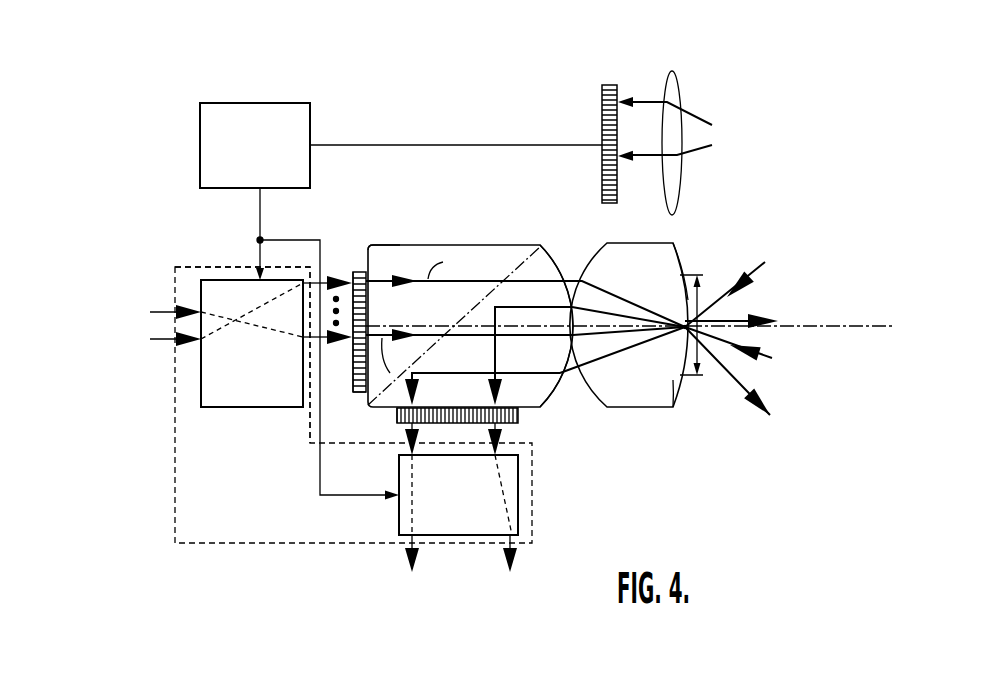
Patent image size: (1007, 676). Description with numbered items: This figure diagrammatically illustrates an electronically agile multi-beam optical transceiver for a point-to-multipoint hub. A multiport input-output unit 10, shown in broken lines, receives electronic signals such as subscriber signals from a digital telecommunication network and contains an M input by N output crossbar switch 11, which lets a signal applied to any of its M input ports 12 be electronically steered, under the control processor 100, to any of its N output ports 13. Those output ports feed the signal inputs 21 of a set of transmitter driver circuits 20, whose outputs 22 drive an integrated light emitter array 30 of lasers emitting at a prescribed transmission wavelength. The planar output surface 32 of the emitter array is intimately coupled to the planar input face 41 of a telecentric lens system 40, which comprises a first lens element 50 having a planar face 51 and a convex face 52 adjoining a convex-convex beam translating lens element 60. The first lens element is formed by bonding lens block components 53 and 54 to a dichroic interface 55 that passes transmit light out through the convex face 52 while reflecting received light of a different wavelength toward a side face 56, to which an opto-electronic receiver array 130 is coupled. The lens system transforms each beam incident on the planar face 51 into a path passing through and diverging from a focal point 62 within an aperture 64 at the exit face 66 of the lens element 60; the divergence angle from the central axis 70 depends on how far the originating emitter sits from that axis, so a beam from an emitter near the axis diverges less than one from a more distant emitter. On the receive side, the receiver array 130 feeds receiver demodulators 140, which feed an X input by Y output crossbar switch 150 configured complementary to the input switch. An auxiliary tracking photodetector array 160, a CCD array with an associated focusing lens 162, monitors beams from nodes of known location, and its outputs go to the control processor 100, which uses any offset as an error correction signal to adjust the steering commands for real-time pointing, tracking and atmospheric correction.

The multiport input-output unit 10 is at (175, 476).
The M input by N output crossbar switch 11 is at (248, 407).
The array of M input ports 12 is at (185, 283).
The array of N output ports 13 is at (308, 286).
The transmitter driver circuits 20 is at (342, 272).
The signal inputs 21 is at (326, 275).
The outputs 22 is at (355, 272).
The light emitter array 30 is at (362, 393).
The planar output surface 32 is at (372, 313).
The telecentric lens system 40 is at (679, 224).
The planar input face 41 is at (369, 250).
The first lens element 50 is at (397, 418).
The planar face 51 is at (530, 412).
The convex face 52 is at (560, 273).
The first lens block component 53 is at (482, 247).
The second lens block component 54 is at (543, 388).
The dichroic interface 55 is at (515, 262).
The side face 56 is at (537, 410).
The convex-convex optical beam translating lens element 60 is at (640, 410).
The focal point 62 is at (685, 327).
The aperture 64 is at (687, 300).
The exit face 66 is at (683, 397).
The axis 70 is at (870, 323).
The control processor 100 is at (263, 103).
The opto-electronic receiver array 130 is at (405, 450).
The receiver demodulators 140 is at (398, 455).
The X input by Y output crossbar switch 150 is at (398, 502).
The auxiliary tracking photodetector array 160 is at (609, 85).
The focusing lens 162 is at (677, 73).